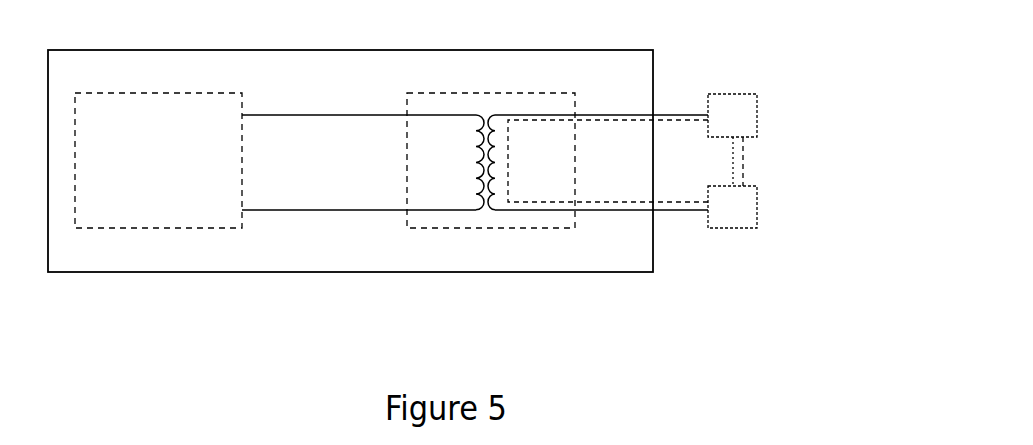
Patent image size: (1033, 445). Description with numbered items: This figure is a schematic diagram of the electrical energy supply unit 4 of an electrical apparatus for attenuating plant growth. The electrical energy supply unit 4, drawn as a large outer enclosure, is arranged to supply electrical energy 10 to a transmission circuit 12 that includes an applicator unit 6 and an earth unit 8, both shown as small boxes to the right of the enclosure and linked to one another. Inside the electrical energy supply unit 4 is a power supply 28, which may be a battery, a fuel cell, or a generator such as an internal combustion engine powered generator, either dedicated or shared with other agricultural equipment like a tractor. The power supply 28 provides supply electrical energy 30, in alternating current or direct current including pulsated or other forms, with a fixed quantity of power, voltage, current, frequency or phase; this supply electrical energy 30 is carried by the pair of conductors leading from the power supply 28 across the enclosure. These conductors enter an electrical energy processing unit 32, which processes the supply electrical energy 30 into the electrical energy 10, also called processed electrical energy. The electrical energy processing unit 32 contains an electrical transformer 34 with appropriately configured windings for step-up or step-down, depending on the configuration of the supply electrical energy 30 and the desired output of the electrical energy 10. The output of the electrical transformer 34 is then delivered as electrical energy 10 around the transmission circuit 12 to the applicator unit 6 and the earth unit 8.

The electrical energy supply unit 4 is at (653, 50).
The power supply 28 is at (168, 172).
The supply electrical energy 30 is at (330, 114).
The electrical energy processing unit 32 is at (407, 108).
The electrical transformer 34 is at (488, 117).
The electrical energy 10 is at (745, 174).
The transmission circuit 12 is at (735, 150).
The applicator unit 6 is at (740, 127).
The earth unit 8 is at (740, 218).